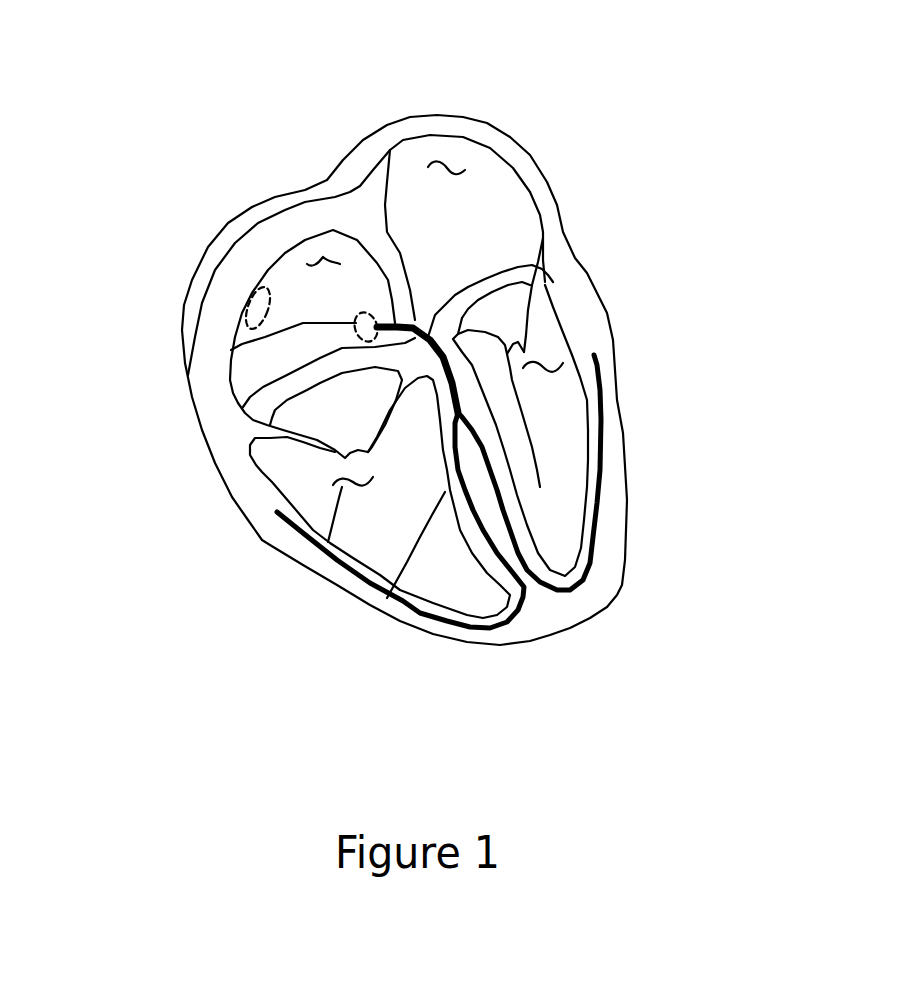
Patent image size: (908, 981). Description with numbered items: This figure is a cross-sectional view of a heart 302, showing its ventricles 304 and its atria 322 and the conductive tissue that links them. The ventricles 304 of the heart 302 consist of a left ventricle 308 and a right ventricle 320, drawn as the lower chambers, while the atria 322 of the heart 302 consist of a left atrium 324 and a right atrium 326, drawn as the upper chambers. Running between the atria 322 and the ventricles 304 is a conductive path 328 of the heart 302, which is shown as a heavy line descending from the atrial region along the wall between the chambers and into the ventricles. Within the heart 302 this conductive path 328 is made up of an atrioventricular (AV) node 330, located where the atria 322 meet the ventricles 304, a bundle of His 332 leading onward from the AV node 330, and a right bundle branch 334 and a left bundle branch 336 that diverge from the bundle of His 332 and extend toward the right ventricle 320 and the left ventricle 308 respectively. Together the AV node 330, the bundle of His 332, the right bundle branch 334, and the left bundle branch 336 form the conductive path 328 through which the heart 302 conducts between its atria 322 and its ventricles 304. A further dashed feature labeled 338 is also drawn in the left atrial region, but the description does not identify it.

The heart 302 is at (872, 665).
The ventricles 304 is at (832, 267).
The left ventricle 308 is at (616, 430).
The right ventricle 320 is at (316, 497).
The atria 322 is at (772, 204).
The left atrium 324 is at (437, 163).
The right atrium 326 is at (280, 275).
The conductive path 328 is at (527, 412).
The atrioventricular (AV) node 330 is at (218, 371).
The bundle of His 332 is at (532, 266).
The right bundle branch 334 is at (341, 553).
The left bundle branch 336 is at (581, 476).
The coronary sinus 338 is at (157, 326).